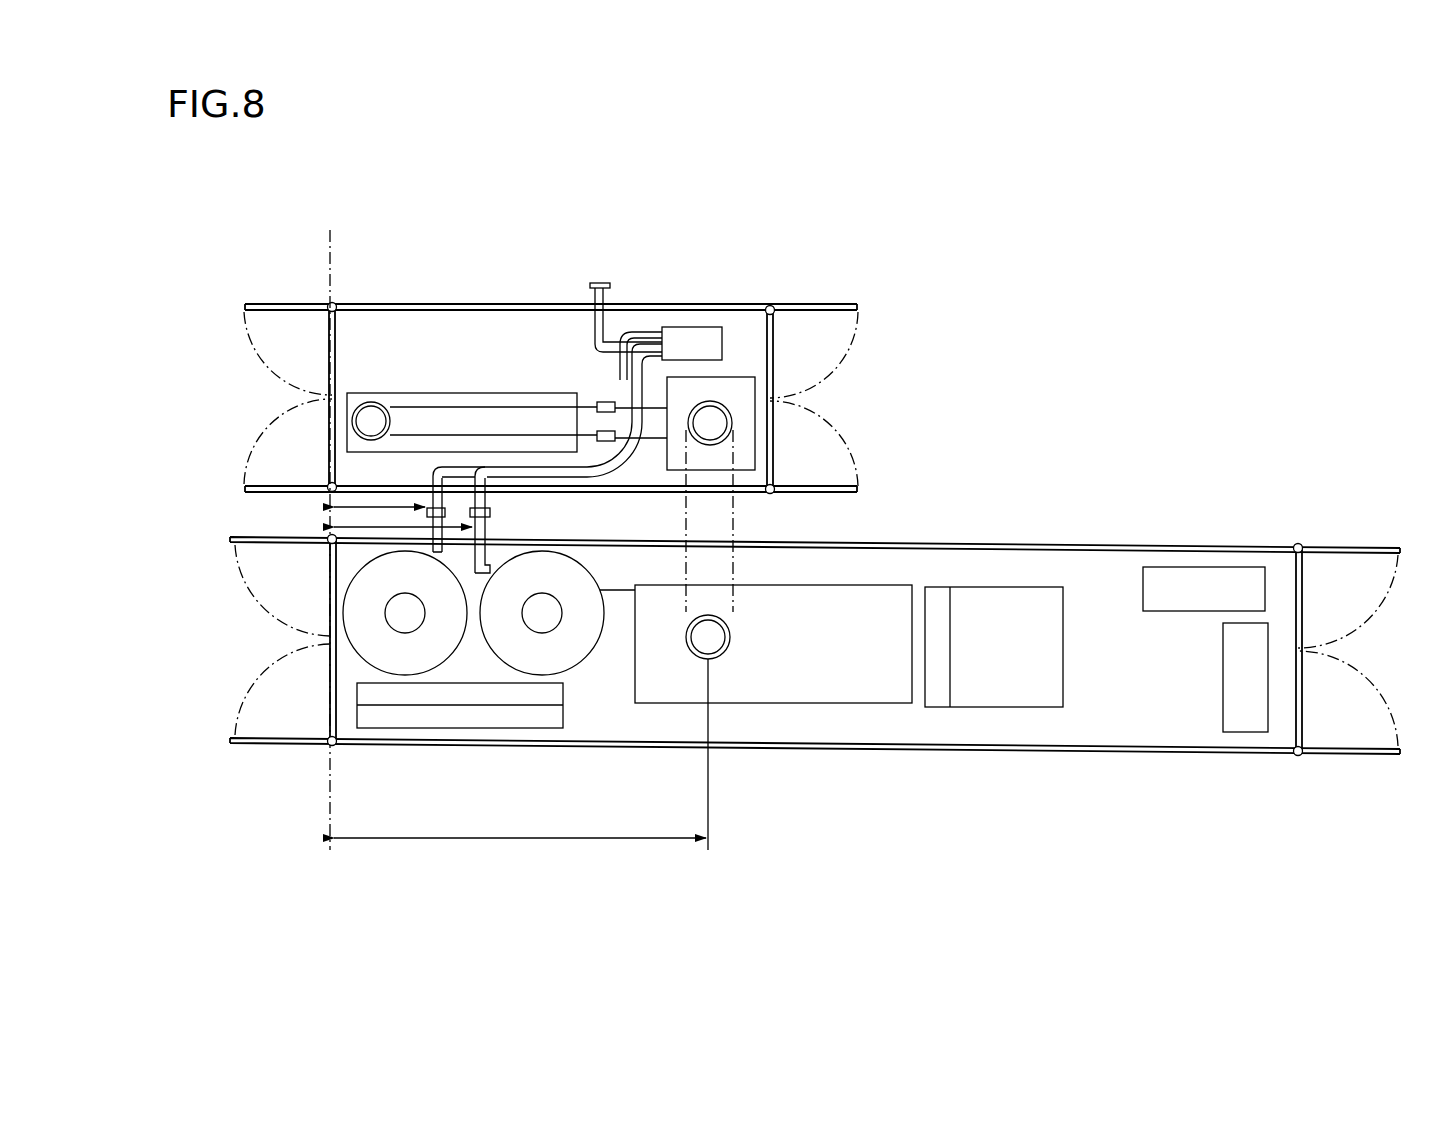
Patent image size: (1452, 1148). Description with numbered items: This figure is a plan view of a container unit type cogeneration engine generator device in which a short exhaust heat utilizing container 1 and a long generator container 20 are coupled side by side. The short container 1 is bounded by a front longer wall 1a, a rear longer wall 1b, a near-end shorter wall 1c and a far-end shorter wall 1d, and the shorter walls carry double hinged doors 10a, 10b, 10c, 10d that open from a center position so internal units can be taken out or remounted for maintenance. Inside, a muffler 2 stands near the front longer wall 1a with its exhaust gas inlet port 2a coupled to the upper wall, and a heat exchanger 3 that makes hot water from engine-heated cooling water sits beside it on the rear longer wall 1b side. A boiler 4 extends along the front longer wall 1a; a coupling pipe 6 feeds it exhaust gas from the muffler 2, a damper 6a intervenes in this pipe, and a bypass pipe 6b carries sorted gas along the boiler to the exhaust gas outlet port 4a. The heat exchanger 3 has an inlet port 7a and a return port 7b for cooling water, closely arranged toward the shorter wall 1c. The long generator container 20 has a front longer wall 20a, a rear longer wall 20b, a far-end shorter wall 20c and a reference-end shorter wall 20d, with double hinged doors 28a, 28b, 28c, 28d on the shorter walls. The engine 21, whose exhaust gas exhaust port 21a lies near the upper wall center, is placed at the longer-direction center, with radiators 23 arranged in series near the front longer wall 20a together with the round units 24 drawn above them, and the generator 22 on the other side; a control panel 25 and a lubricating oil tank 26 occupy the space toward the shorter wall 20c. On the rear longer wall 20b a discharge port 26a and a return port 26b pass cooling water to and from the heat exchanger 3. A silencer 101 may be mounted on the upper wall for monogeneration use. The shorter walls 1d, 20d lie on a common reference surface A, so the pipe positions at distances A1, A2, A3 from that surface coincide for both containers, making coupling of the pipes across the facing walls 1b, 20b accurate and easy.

The short exhaust heat utilizing container 1 is at (564, 384).
The front longer wall 1a is at (420, 302).
The rear longer wall 1b is at (600, 497).
The 20 f side shorter wall 1c is at (776, 382).
The 0 f side shorter wall 1d is at (324, 382).
The double hinged door 10a is at (872, 448).
The double hinged door 10b is at (848, 316).
The double hinged door 10c is at (255, 482).
The double hinged door 10d is at (255, 313).
The muffler 2 is at (733, 407).
The exhaust gas inlet port 2a is at (728, 415).
The heat exchanger 3 is at (685, 337).
The boiler 4 is at (462, 395).
The exhaust gas outlet port 4a is at (365, 400).
The coupling pipe 6 is at (652, 442).
The damper 6a is at (596, 402).
The bypass pipe 6b is at (540, 407).
The inlet port 7a is at (491, 512).
The return port 7b is at (427, 510).
The discharge port 26a is at (491, 516).
The return port 26b is at (435, 500).
The silencer 101 is at (733, 521).
The reference surface A is at (334, 230).
The distance A1 is at (330, 504).
The distance A2 is at (330, 527).
The distance A3 is at (521, 754).
The long generator container 20 is at (817, 651).
The front longer wall 20a is at (937, 752).
The rear longer wall 20b is at (878, 541).
The 40 f side shorter wall 20c is at (1305, 634).
The 0 f side shorter wall 20d is at (325, 625).
The double hinged door 28a is at (1348, 757).
The double hinged door 28b is at (1350, 548).
The double hinged door 28c is at (272, 744).
The double hinged door 28d is at (270, 538).
The engine 21 is at (756, 690).
The exhaust gas exhaust port 21a is at (715, 662).
The generator 22 is at (1000, 690).
The radiator 23 is at (458, 718).
The tank 24 is at (402, 663).
The control panel 25 is at (1250, 720).
The lubricating oil tank 26 is at (1195, 580).